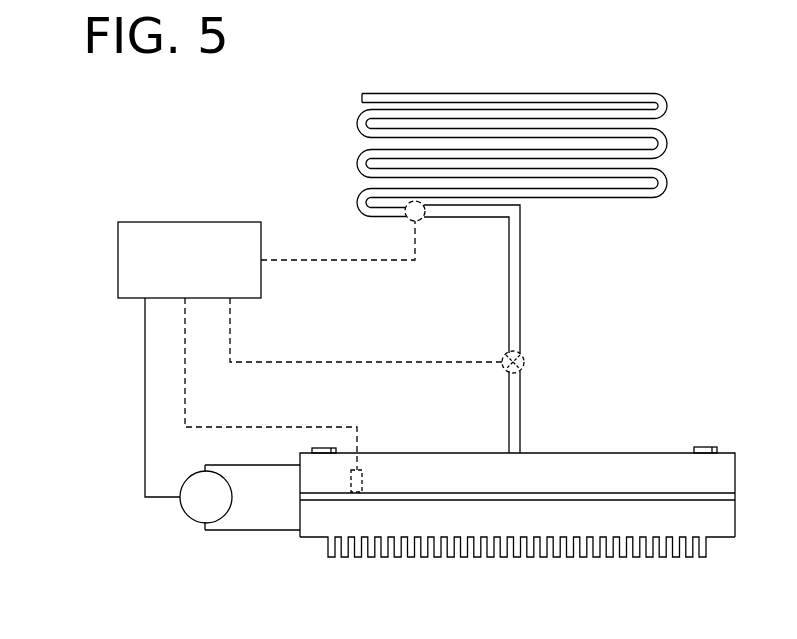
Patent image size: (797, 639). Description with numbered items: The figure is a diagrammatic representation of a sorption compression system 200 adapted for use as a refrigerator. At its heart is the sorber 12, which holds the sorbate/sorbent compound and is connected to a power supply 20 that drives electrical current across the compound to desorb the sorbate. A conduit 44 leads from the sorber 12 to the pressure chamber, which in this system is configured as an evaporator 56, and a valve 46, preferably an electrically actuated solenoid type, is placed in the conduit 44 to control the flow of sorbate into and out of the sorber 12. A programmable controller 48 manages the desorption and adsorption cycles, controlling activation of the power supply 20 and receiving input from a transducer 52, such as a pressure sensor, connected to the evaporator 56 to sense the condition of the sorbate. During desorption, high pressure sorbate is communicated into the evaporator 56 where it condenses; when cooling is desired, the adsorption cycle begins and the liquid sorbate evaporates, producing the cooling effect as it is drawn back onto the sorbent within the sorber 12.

The sorption compression system 200 is at (95, 203).
The programmable controller 48 is at (171, 275).
The evaporator 56 is at (560, 90).
The transducer 52 is at (421, 222).
The valve 46 is at (522, 352).
The conduit 44 is at (520, 398).
The power supply 20 is at (187, 515).
The sorber 12 is at (627, 447).